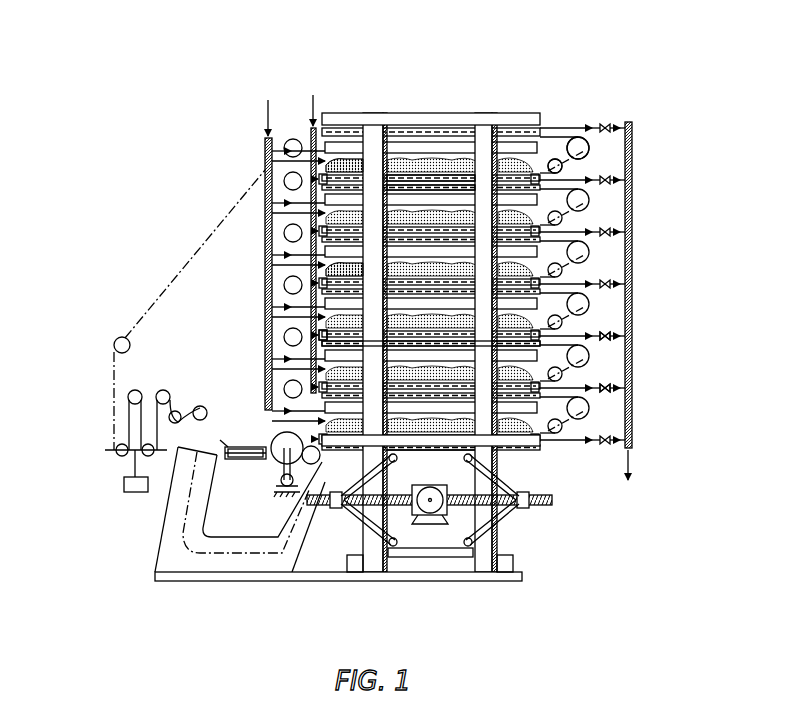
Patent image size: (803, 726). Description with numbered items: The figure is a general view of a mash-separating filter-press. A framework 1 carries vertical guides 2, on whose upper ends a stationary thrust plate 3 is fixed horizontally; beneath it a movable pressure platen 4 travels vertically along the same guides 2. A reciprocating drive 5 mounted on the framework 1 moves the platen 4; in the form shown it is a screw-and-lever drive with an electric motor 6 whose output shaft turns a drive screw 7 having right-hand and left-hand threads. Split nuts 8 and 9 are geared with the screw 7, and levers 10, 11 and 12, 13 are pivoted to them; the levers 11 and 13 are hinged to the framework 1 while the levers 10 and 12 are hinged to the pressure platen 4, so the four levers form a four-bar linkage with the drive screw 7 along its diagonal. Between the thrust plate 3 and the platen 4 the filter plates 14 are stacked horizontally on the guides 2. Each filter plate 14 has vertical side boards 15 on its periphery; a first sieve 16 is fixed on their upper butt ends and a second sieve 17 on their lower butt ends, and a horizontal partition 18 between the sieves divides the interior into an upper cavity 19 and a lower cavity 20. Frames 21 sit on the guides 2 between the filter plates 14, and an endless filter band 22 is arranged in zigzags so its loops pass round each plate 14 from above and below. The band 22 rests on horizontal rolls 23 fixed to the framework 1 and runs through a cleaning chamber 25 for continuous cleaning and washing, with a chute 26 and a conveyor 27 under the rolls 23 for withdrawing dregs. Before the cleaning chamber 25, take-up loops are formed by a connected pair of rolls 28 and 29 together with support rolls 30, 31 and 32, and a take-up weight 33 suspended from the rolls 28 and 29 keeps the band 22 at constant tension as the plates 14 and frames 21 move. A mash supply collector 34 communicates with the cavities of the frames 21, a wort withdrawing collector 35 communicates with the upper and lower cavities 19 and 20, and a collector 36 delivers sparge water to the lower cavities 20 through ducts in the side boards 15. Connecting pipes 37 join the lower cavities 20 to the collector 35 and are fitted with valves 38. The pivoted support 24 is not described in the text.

The framework 1 is at (298, 587).
The vertical guides 2 is at (373, 548).
The stationary thrust plate 3 is at (517, 113).
The movable pressure platen 4 is at (541, 441).
The reciprocating drive 5 is at (430, 485).
The electric motor 6 is at (430, 525).
The drive screw 7 is at (453, 506).
The split nut 8 is at (330, 508).
The split nut 9 is at (530, 508).
The lever 10 is at (362, 497).
The lever 11 is at (352, 510).
The lever 12 is at (500, 495).
The lever 13 is at (506, 508).
The filter plate 14 is at (541, 162).
The vertical side boards 15 is at (342, 168).
The first sieve 16 is at (397, 176).
The second sieve 17 is at (424, 188).
The horizontal partition 18 is at (449, 130).
The upper cavity 19 is at (320, 332).
The lower cavity 20 is at (335, 345).
The frames 21 is at (325, 266).
The endless filter band 22 is at (188, 258).
The horizontal rolls 23 is at (294, 140).
The pivot roller support 24 is at (275, 497).
The cleaning chamber 25 is at (195, 555).
The chute 26 is at (245, 447).
The conveyor 27 is at (235, 460).
The roll 28 is at (117, 451).
The roll 29 is at (149, 456).
The support roll 30 is at (118, 340).
The support roll 31 is at (134, 390).
The support roll 32 is at (165, 390).
The take-up weight 33 is at (131, 493).
The mash supply collector 34 is at (266, 231).
The wort withdrawing collector 35 is at (628, 122).
The sparge water collector 36 is at (312, 128).
The connecting pipes 37 is at (614, 337).
The valves 38 is at (608, 384).